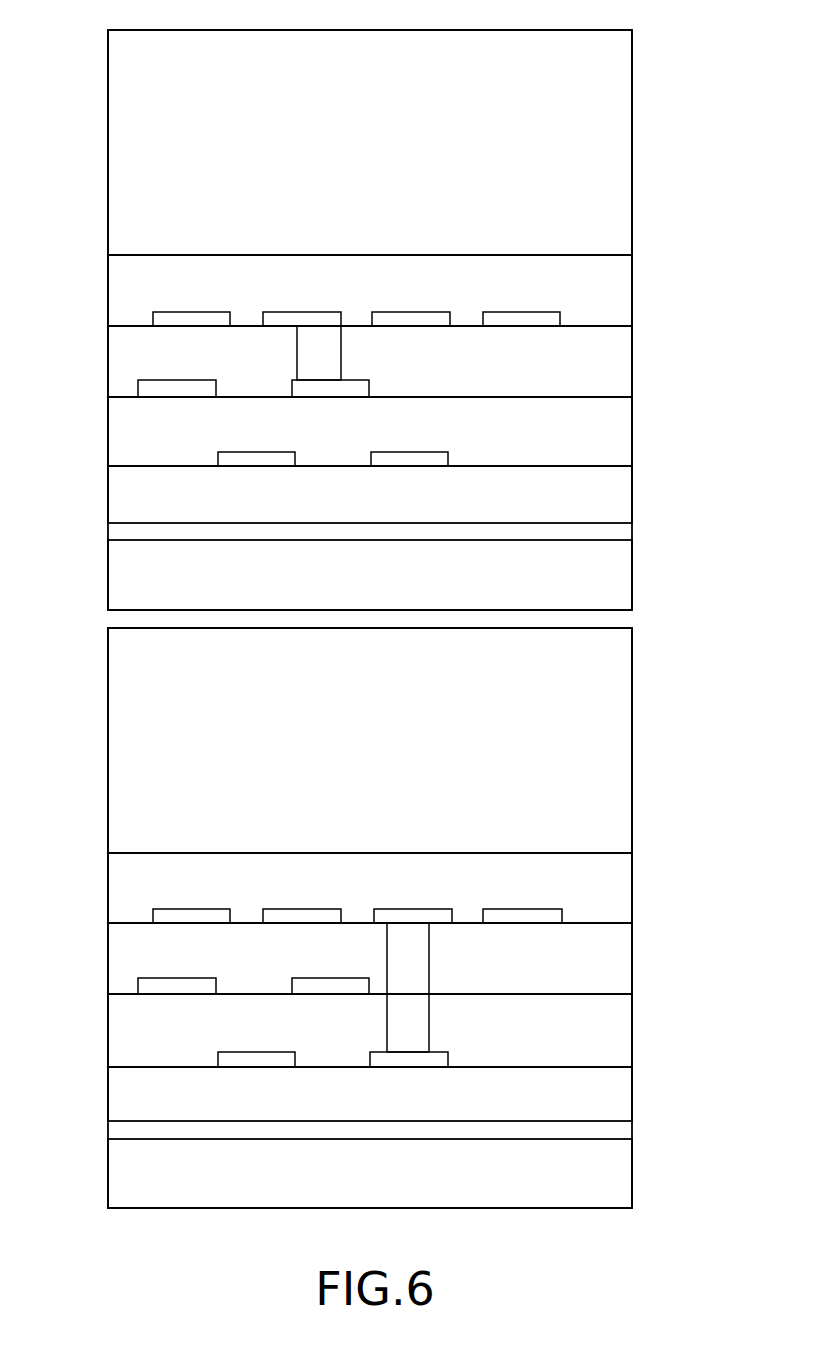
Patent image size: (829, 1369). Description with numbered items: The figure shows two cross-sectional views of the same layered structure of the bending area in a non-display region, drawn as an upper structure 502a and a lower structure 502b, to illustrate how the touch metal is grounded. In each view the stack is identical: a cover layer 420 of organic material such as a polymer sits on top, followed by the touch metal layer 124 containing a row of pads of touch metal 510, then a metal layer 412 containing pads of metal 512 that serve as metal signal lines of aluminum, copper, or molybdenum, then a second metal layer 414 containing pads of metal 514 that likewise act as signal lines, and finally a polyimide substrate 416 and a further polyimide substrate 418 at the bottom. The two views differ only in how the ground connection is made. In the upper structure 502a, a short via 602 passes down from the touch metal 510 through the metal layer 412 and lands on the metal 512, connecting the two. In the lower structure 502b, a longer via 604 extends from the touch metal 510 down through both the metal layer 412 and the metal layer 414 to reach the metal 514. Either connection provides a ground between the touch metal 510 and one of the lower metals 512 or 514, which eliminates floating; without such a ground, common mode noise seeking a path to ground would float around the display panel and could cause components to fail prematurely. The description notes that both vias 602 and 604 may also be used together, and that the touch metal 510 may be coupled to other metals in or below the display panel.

The cover layer 420 is at (573, 106).
The touch metal layer 124 is at (572, 291).
The metal layer 412 is at (572, 367).
The metal layer 414 is at (572, 442).
The polyimide substrate 416 is at (572, 504).
The polyimide substrate 418 is at (572, 584).
The touch metal 510 is at (153, 312).
The metal 512 is at (138, 380).
The metal 514 is at (218, 452).
The via 602 is at (341, 361).
The via 604 is at (429, 966).
The structure 502a is at (617, 193).
The structure 502b is at (620, 742).